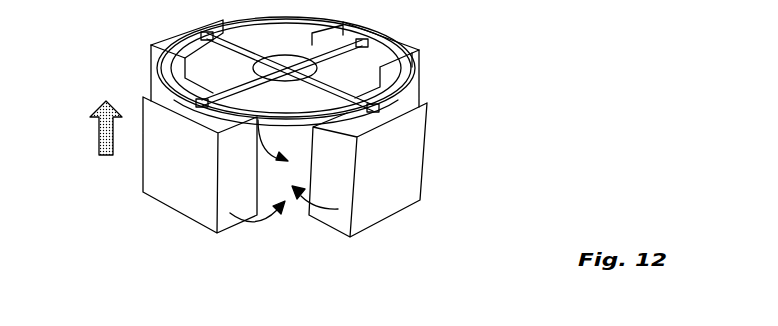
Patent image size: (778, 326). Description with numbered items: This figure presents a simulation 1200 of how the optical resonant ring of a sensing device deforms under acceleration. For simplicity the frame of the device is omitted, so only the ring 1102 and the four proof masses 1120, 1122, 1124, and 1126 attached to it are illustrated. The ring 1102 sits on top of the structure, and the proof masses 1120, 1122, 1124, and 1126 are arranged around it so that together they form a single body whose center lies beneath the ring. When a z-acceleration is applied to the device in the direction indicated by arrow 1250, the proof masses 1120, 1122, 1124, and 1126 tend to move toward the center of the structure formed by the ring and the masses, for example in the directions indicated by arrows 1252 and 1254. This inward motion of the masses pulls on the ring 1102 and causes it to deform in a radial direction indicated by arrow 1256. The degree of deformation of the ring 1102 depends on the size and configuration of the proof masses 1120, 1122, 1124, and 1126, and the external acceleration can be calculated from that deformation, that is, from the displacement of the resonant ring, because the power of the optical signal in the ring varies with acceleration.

The ring 1102 is at (330, 22).
The proof mass 1122 is at (420, 69).
The proof mass 1124 is at (149, 48).
The proof mass 1126 is at (150, 197).
The proof mass 1120 is at (427, 163).
The simulation 1200 is at (556, 122).
The arrow 1250 is at (97, 110).
The arrow 1252 is at (262, 228).
The arrow 1254 is at (342, 210).
The arrow 1256 is at (275, 149).